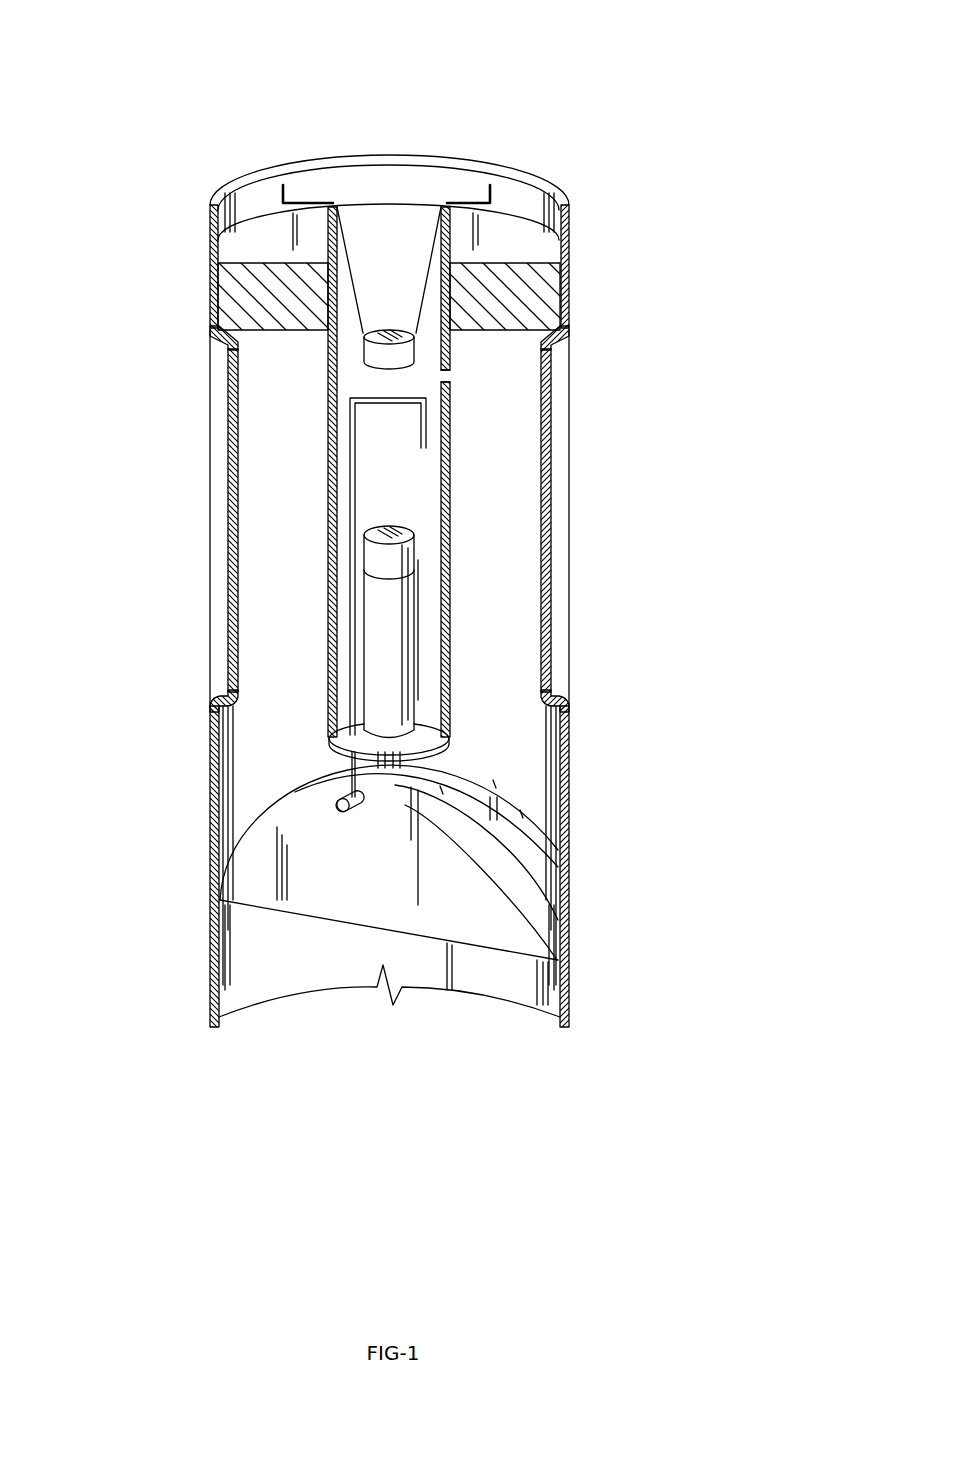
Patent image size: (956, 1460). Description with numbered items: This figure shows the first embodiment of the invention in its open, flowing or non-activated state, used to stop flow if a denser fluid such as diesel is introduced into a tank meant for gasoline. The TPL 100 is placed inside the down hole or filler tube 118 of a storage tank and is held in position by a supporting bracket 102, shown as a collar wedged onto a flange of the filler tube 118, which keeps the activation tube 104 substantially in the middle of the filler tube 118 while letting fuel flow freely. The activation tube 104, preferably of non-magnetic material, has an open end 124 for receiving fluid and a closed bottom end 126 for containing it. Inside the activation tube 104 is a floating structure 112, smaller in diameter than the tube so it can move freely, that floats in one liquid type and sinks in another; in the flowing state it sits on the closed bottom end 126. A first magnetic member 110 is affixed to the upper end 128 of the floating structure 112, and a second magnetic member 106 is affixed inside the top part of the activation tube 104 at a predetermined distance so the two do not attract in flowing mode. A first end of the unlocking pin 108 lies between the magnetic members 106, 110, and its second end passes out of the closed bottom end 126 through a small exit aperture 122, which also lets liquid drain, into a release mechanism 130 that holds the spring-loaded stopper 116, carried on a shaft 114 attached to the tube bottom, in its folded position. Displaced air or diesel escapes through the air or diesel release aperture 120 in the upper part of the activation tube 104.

The TPL 100 is at (472, 563).
The supporting bracket 102 is at (278, 301).
The activation tube 104 is at (328, 409).
The second magnetic member 106 is at (376, 361).
The unlocking pin 108 is at (350, 512).
The first magnetic member 110 is at (385, 558).
The floating structure 112 is at (425, 647).
The shaft 114 is at (463, 776).
The spring-loaded stopper 116 is at (448, 890).
The filler tube 118 is at (598, 182).
The air or diesel release aperture 120 is at (455, 380).
The small exit aperture 122 is at (350, 745).
The open end 124 is at (396, 215).
The closed bottom end 126 is at (425, 732).
The upper end 128 is at (382, 660).
The release mechanism 130 is at (340, 805).